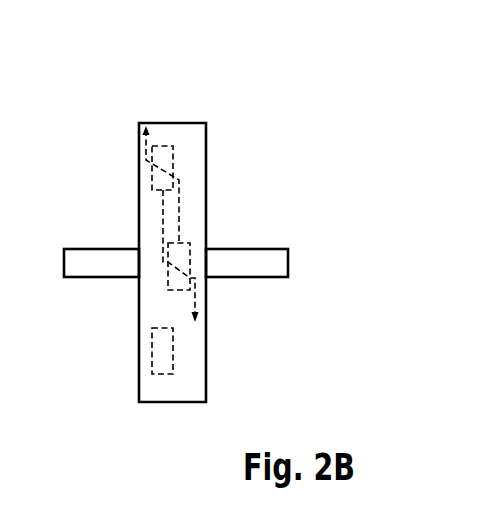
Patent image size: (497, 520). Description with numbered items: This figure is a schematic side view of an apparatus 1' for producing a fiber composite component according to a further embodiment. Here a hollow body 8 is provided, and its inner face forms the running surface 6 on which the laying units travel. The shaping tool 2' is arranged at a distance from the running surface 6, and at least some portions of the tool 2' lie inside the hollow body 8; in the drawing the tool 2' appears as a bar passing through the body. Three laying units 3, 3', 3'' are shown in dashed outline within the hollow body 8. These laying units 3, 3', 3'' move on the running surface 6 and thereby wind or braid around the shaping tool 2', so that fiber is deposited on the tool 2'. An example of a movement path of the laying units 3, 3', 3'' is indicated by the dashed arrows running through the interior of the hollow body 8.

The sensor device 1' is at (181, 201).
The shaping tool 2' is at (176, 228).
The laying unit 3 is at (171, 198).
The laying unit 3' is at (214, 251).
The laying unit 3'' is at (128, 353).
The running surface 6 is at (193, 162).
The hollow body 8 is at (206, 365).